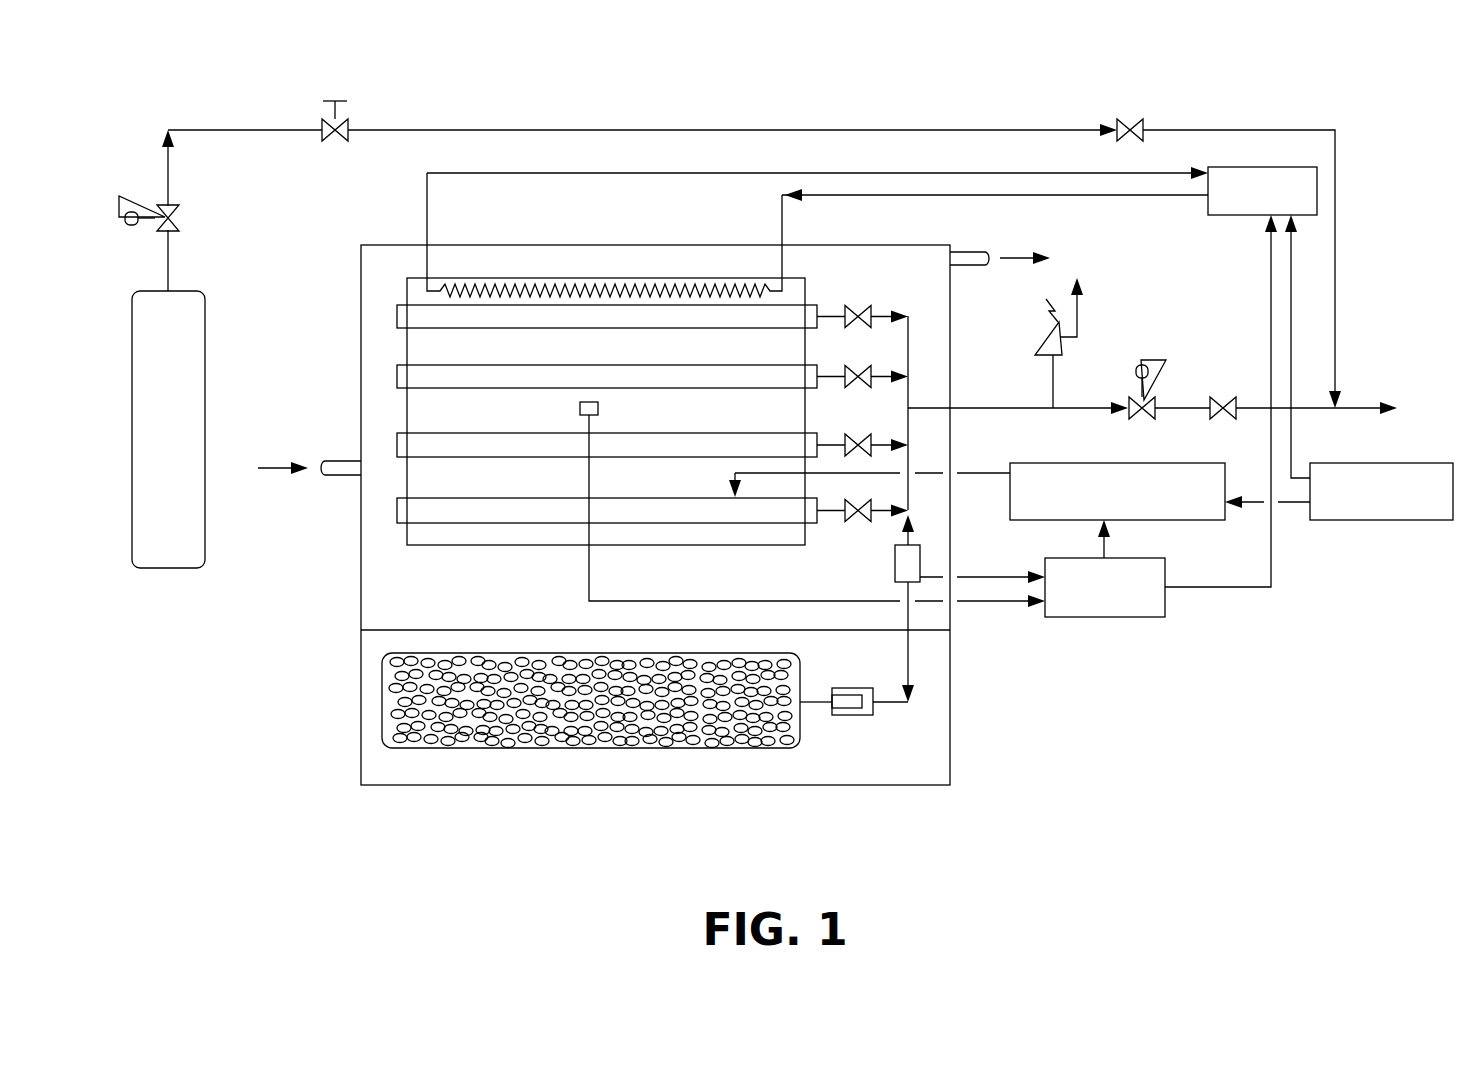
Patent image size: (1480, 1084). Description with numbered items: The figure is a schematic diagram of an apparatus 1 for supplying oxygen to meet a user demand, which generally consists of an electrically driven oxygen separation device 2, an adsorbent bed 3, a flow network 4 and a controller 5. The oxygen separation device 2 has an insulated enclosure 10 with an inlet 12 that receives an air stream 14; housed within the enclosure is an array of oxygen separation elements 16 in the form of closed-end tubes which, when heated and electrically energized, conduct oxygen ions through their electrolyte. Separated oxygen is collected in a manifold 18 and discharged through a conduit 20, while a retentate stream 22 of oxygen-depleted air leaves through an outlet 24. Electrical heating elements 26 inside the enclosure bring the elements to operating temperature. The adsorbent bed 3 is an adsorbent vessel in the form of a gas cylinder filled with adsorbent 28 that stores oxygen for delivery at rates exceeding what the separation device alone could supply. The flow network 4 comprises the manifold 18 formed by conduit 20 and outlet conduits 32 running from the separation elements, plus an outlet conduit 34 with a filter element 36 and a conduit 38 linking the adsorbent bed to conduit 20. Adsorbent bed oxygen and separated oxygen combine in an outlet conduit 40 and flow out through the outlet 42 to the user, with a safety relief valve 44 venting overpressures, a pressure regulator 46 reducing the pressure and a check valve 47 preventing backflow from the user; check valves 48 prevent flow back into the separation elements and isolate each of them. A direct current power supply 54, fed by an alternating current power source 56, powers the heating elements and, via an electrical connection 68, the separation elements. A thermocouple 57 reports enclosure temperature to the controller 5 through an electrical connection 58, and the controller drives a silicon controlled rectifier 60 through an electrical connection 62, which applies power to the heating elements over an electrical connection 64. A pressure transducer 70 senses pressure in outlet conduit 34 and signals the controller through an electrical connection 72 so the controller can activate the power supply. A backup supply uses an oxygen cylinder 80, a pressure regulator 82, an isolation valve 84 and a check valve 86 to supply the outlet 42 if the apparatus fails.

The apparatus 1 is at (895, 816).
The electrically driven oxygen separation device 2 is at (690, 236).
The adsorbent bed 3 is at (565, 772).
The flow network 4 is at (1113, 289).
The controller 5 is at (1112, 641).
The insulated enclosure 10 is at (547, 243).
The inlet 12 is at (338, 461).
The air stream 14 is at (270, 468).
The oxygen separation elements 16 is at (397, 316).
The manifold 18 is at (928, 350).
The conduit 20 is at (910, 398).
The retentate stream 22 is at (1015, 258).
The outlet 24 is at (975, 252).
The electrical heating elements 26 is at (628, 287).
The adsorbent 28 is at (520, 720).
The outlet conduits 32 is at (882, 314).
The outlet conduit 34 is at (812, 700).
The filter element 36 is at (852, 716).
The conduit 38 is at (910, 650).
The outlet conduit 40 is at (1012, 410).
The outlet 42 is at (1365, 405).
The safety relief valve 44 is at (1062, 357).
The pressure regulator 46 is at (1152, 405).
The check valve 47 is at (1232, 395).
The check valves 48 is at (857, 306).
The direct current power supply 54 is at (1180, 520).
The alternating current power source 56 is at (1437, 520).
The thermocouple 57 is at (600, 408).
The electrical connection 58 is at (684, 601).
The silicon controlled rectifier 60 is at (1242, 215).
The electrical connection 62 is at (1275, 580).
The electrical connection 64 is at (1137, 198).
The electrical connection 68 is at (975, 475).
The pressure transducer 70 is at (905, 573).
The electrical connection 72 is at (996, 578).
The oxygen cylinder 80 is at (135, 545).
The pressure regulator 82 is at (182, 218).
The isolation valve 84 is at (345, 120).
The check valve 86 is at (1142, 118).